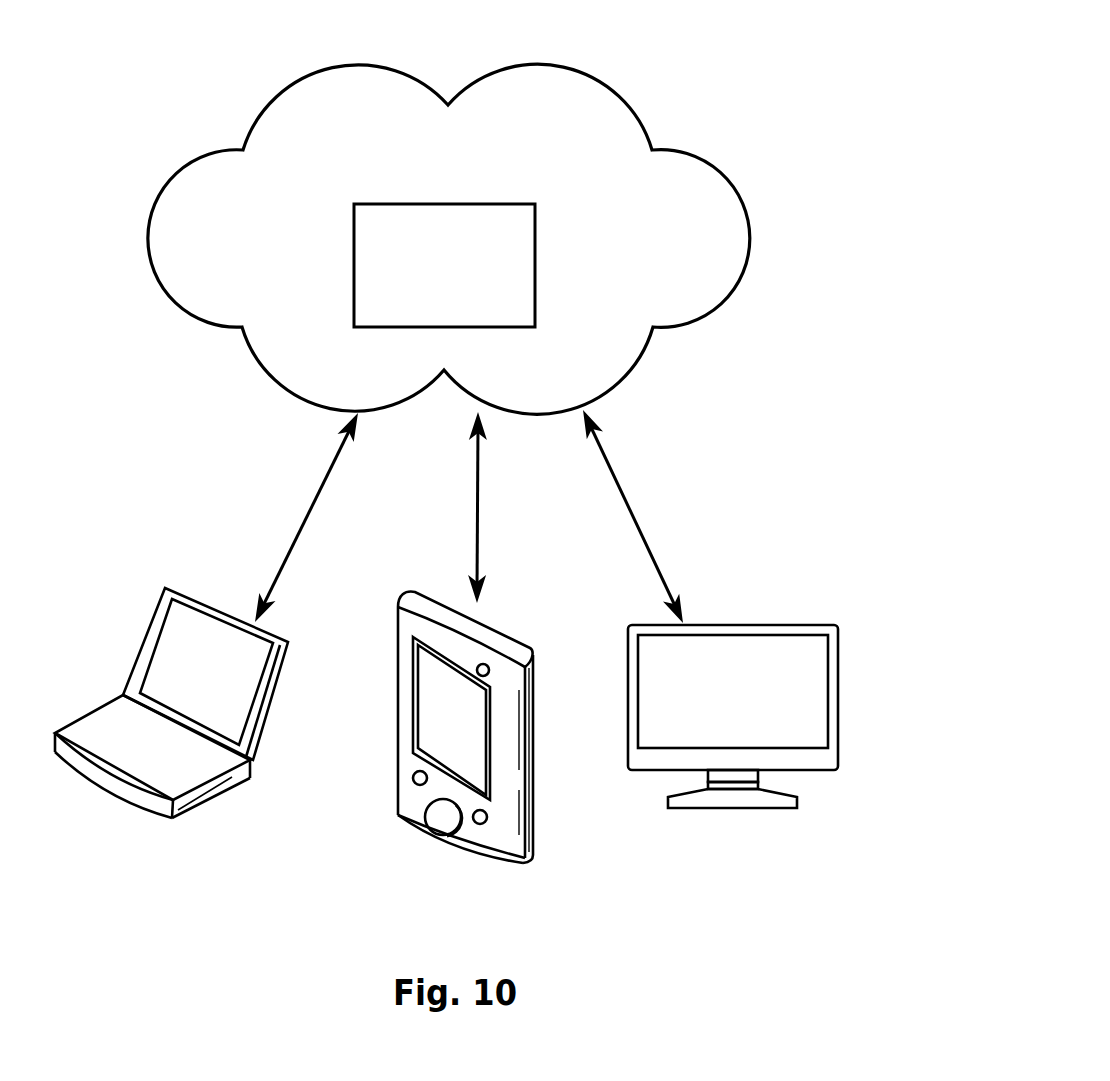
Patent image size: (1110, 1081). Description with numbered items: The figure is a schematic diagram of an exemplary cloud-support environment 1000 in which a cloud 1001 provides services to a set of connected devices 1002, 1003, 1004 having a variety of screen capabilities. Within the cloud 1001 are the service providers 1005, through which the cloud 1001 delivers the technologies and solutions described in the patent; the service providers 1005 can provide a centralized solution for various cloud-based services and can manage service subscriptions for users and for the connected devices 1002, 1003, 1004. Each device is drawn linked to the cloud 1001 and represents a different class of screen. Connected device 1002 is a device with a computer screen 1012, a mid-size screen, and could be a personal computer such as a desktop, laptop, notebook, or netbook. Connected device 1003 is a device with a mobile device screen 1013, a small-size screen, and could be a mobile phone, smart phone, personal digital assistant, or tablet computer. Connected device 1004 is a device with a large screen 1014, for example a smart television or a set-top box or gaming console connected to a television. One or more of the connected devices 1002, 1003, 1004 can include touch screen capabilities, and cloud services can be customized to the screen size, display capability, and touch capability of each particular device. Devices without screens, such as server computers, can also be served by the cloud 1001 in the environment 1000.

The example environment 1000 is at (690, 94).
The cloud 1001 is at (480, 187).
The service providers 1005 is at (483, 312).
The connected device 1002 is at (90, 730).
The computer screen 1012 is at (236, 690).
The connected device 1003 is at (437, 606).
The mobile device screen 1013 is at (489, 725).
The connected device 1004 is at (737, 622).
The large screen 1014 is at (771, 708).